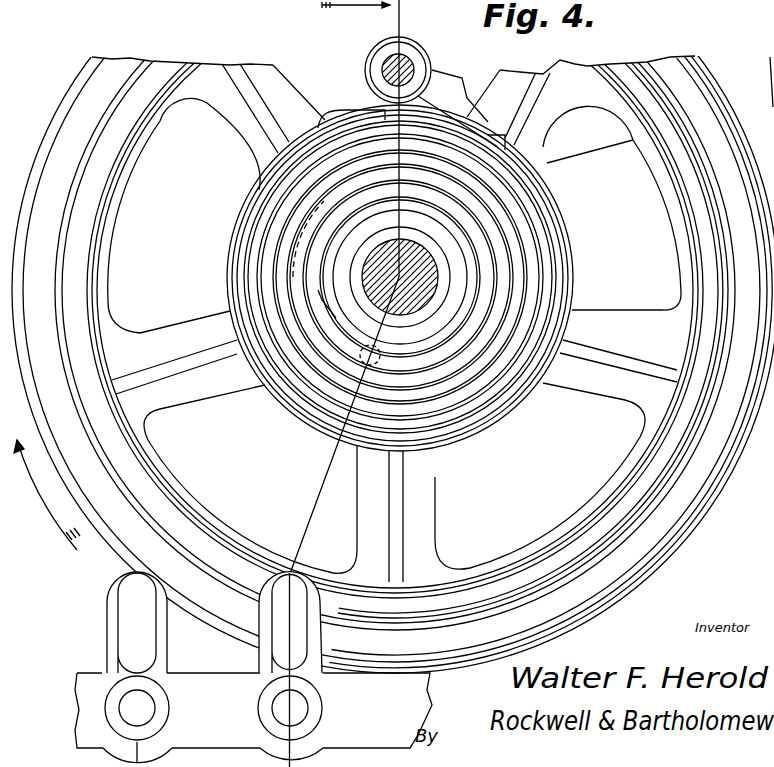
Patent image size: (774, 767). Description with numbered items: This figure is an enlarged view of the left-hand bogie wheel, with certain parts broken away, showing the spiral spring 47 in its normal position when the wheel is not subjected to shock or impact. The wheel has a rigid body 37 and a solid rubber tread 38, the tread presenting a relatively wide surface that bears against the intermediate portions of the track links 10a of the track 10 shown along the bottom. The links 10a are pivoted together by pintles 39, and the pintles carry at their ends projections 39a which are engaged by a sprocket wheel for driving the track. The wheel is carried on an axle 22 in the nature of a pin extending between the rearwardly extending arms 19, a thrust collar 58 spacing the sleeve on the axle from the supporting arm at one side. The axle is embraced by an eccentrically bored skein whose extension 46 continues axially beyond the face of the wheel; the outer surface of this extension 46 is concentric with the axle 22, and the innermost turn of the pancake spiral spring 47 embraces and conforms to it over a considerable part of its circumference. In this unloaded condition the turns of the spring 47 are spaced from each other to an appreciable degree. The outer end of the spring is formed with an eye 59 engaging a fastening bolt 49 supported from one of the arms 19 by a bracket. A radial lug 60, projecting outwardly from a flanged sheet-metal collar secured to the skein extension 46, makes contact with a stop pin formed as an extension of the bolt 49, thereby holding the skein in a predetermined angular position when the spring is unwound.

The track 10 is at (77, 693).
The track links 10a is at (216, 713).
The rearwardly extending arms 19 is at (750, 112).
The axle 22 is at (432, 270).
The rigid body 37 is at (650, 414).
The solid rubber tread 38 is at (714, 463).
The pintles 39 is at (303, 705).
The projections 39a is at (313, 719).
The skein extension 46 is at (472, 289).
The spiral spring 47 is at (505, 378).
The fastening bolt 49 is at (406, 67).
The thrust collar 58 is at (427, 315).
The eye 59 is at (372, 58).
The radial lug 60 is at (456, 79).